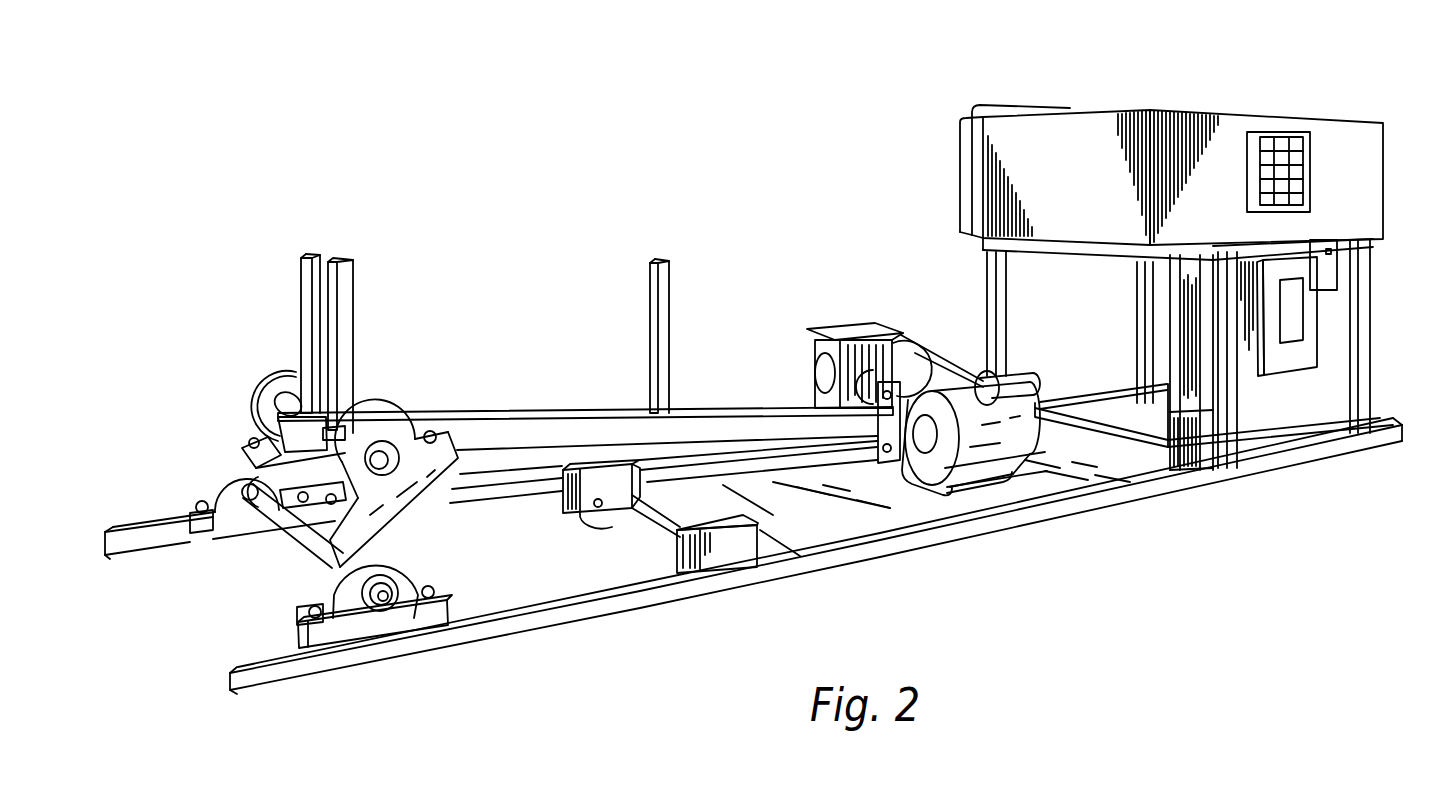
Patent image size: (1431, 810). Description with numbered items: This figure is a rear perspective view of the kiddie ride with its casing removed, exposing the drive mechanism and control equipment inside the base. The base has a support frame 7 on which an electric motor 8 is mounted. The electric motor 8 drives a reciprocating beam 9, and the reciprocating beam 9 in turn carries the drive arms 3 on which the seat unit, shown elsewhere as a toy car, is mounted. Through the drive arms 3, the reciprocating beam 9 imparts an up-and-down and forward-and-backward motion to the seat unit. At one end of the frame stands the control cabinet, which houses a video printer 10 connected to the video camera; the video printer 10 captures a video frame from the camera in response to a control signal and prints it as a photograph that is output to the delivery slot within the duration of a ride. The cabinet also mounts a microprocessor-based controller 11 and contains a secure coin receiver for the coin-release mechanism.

The drive arms 3 is at (330, 321).
The support frame 7 is at (818, 560).
The electric motor 8 is at (987, 450).
The reciprocating beam 9 is at (506, 428).
The video printer 10 is at (1087, 125).
The microprocessor-based controller 11 is at (1303, 352).